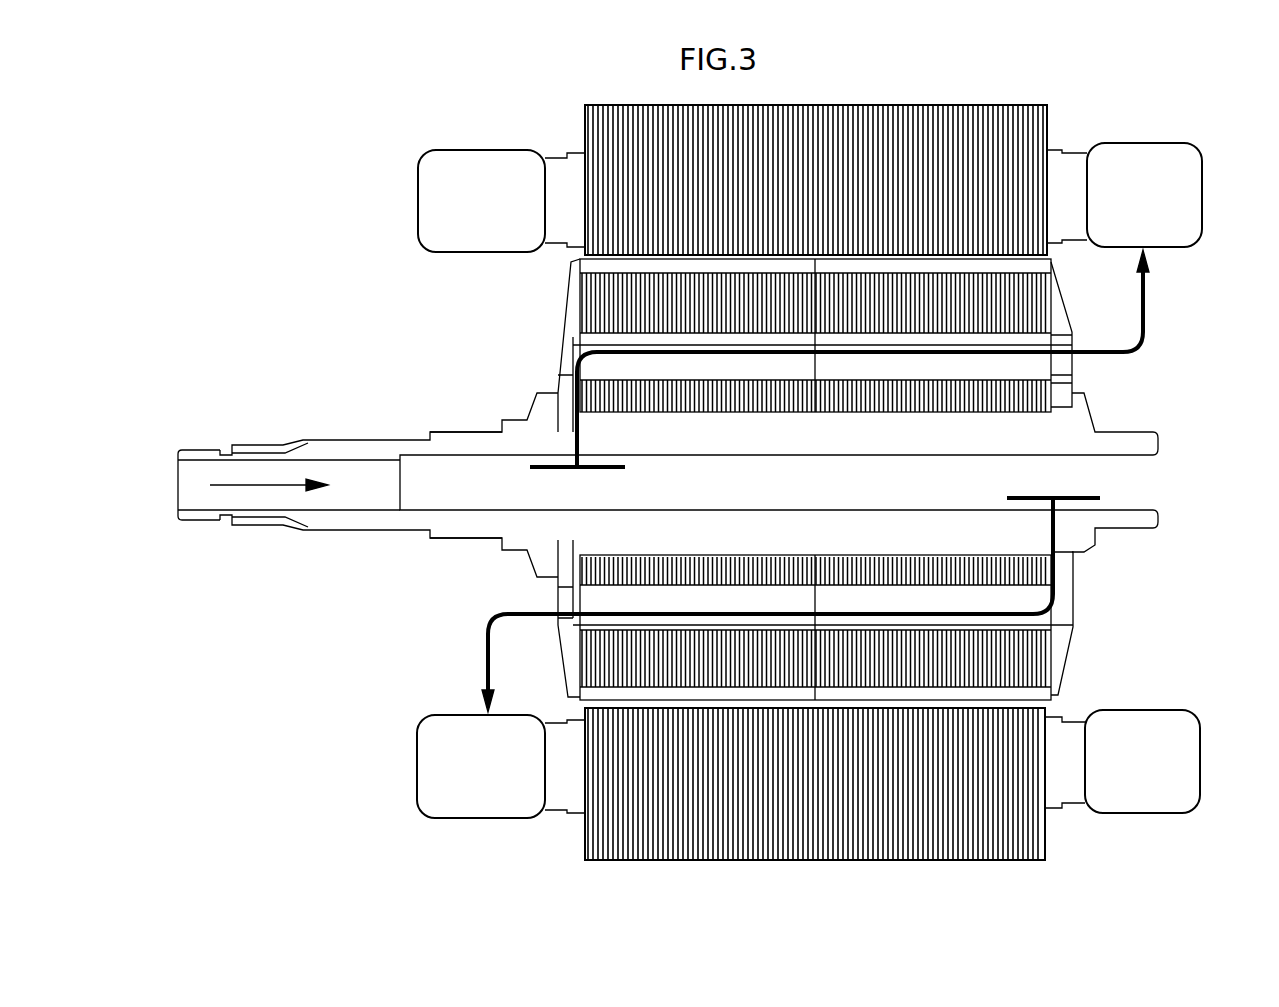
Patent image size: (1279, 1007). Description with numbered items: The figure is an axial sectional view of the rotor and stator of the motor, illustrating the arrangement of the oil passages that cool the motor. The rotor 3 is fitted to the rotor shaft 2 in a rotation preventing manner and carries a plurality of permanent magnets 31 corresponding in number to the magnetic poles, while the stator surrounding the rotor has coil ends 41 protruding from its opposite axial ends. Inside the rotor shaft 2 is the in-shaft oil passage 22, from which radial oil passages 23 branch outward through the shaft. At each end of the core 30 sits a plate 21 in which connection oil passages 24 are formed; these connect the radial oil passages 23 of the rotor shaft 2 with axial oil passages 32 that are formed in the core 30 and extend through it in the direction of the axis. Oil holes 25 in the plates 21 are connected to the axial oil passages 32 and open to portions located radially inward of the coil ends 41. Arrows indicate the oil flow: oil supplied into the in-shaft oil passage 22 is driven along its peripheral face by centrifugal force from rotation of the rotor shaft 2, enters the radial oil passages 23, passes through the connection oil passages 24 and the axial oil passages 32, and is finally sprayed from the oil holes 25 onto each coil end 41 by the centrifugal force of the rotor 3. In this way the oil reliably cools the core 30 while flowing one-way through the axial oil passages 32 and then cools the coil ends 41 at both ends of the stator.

The rotor shaft 2 is at (370, 458).
The rotor 3 is at (512, 304).
The plate 21 is at (567, 342).
The in-shaft oil passage 22 is at (468, 500).
The radial oil passages 23 is at (580, 433).
The connection oil passages 24 is at (576, 385).
The oil holes 25 is at (1068, 370).
The core 30 is at (1040, 660).
The permanent magnets 31 is at (590, 268).
The axial oil passages 32 is at (726, 385).
The coil ends 41 is at (1188, 220).